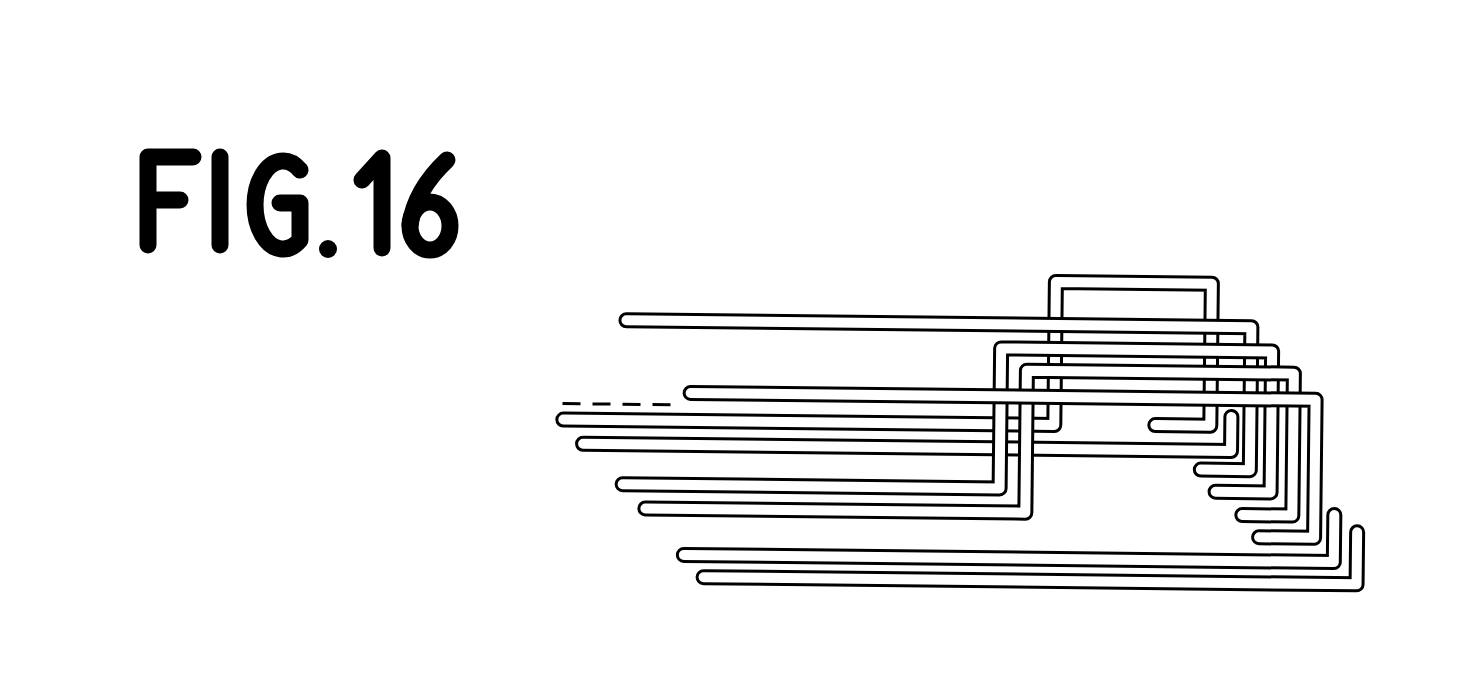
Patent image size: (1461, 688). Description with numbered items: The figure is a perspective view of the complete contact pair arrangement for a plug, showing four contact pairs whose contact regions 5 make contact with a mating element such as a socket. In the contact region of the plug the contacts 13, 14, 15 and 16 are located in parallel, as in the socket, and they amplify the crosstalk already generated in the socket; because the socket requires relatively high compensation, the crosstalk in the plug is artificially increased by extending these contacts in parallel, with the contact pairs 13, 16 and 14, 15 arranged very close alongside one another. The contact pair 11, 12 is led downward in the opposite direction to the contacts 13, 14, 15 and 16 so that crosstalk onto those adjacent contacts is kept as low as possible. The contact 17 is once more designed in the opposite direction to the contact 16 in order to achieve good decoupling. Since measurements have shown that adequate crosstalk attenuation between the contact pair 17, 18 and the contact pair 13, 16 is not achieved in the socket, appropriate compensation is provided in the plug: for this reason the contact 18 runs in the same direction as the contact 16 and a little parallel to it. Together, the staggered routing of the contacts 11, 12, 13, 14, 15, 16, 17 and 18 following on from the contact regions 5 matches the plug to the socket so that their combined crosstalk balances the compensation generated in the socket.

The contact region 5 is at (1398, 510).
The contact 11 is at (698, 578).
The contact 12 is at (678, 556).
The contact 13 is at (695, 386).
The contact 14 is at (640, 510).
The contact 15 is at (616, 486).
The contact 16 is at (648, 312).
The contact 17 is at (575, 445).
The contact 18 is at (555, 424).